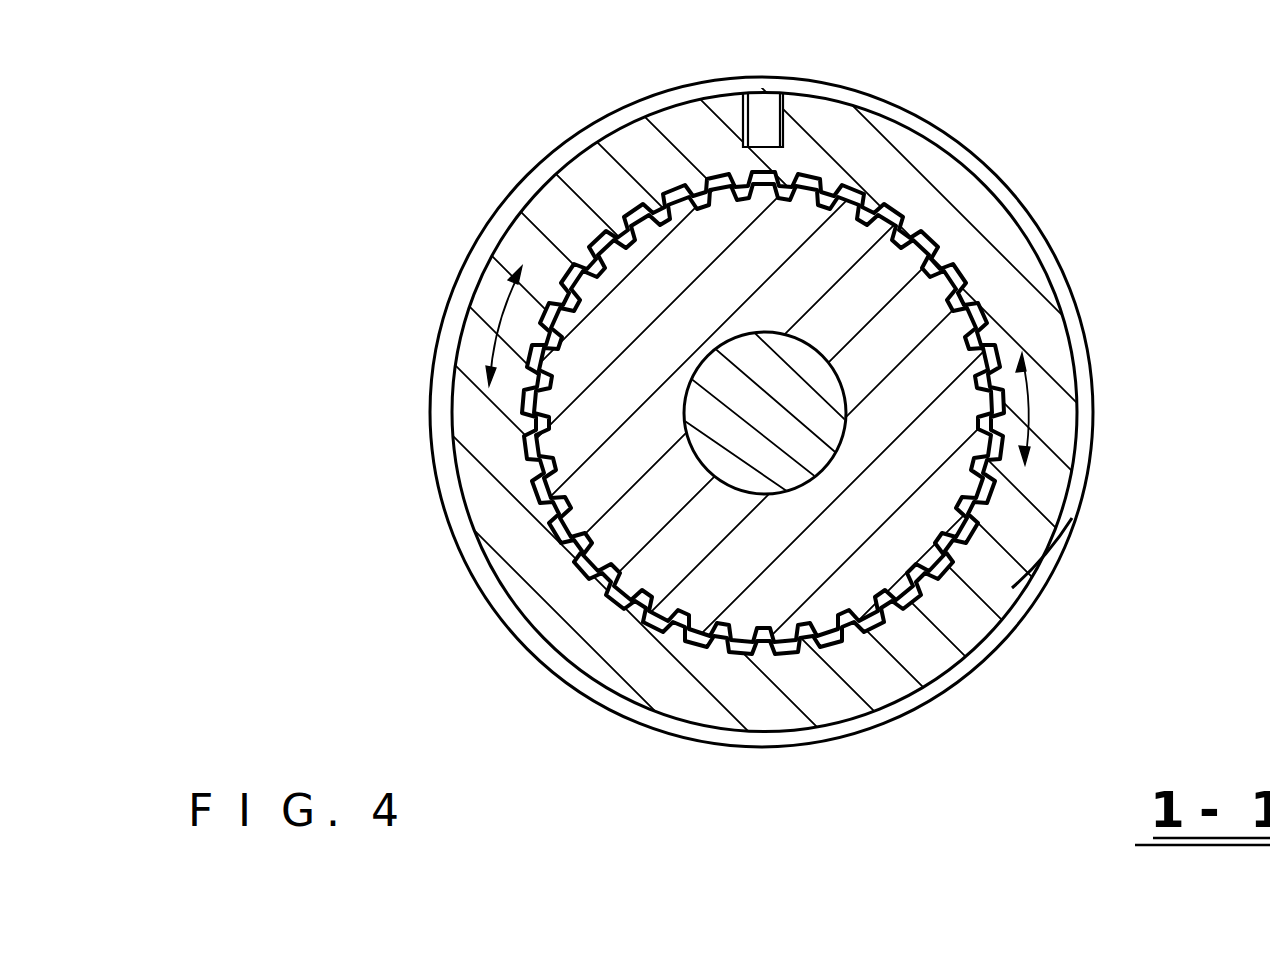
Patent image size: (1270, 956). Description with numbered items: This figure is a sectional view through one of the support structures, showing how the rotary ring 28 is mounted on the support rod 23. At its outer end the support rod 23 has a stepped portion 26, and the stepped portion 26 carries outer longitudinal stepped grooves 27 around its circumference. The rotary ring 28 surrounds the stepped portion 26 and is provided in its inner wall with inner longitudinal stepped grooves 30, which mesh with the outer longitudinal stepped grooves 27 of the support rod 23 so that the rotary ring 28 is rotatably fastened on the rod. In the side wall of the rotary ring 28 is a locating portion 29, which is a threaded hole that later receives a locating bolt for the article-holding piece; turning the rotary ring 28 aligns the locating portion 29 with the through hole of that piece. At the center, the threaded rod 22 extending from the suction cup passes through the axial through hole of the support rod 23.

The threaded rod 22 is at (717, 408).
The support rod 23 is at (1043, 247).
The stepped portion 26 is at (940, 357).
The outer longitudinal stepped grooves 27 is at (900, 213).
The rotary ring 28 is at (1058, 432).
The locating portion 29 is at (762, 122).
The inner longitudinal stepped grooves 30 is at (1043, 555).